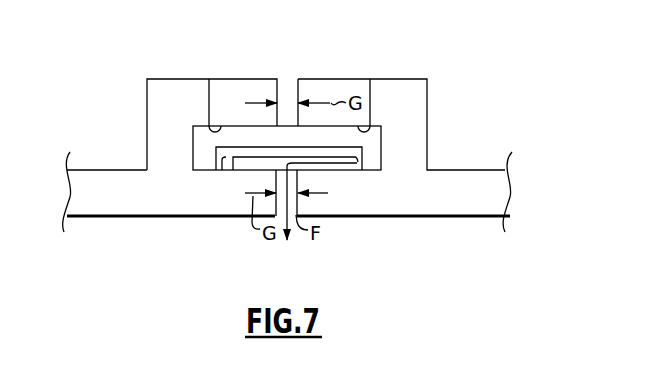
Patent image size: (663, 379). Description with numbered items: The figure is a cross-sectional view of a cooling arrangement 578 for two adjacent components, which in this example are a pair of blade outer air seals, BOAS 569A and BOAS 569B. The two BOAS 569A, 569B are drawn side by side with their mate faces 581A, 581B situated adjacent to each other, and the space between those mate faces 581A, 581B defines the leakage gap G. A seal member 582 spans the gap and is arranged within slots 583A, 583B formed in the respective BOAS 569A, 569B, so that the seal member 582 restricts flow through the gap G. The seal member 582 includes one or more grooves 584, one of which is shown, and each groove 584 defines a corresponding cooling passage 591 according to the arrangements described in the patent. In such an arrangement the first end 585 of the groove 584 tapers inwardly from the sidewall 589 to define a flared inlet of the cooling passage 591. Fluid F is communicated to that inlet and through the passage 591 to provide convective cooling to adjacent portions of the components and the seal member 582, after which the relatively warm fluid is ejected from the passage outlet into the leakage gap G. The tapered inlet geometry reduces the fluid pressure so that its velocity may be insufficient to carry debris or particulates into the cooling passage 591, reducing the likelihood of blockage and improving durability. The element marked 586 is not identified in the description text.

The cooling arrangement 578 is at (136, 50).
The BOAS 569A is at (147, 101).
The BOAS 569B is at (427, 101).
The slot 583A is at (209, 79).
The slot 583B is at (371, 68).
The mate face 581A is at (278, 84).
The mate face 581B is at (292, 84).
The first end 585 is at (358, 163).
The sidewall 589 is at (213, 160).
The seal member 582 is at (220, 165).
The plate 586 is at (230, 165).
The cooling passage 591 is at (343, 165).
The groove 584 is at (331, 166).